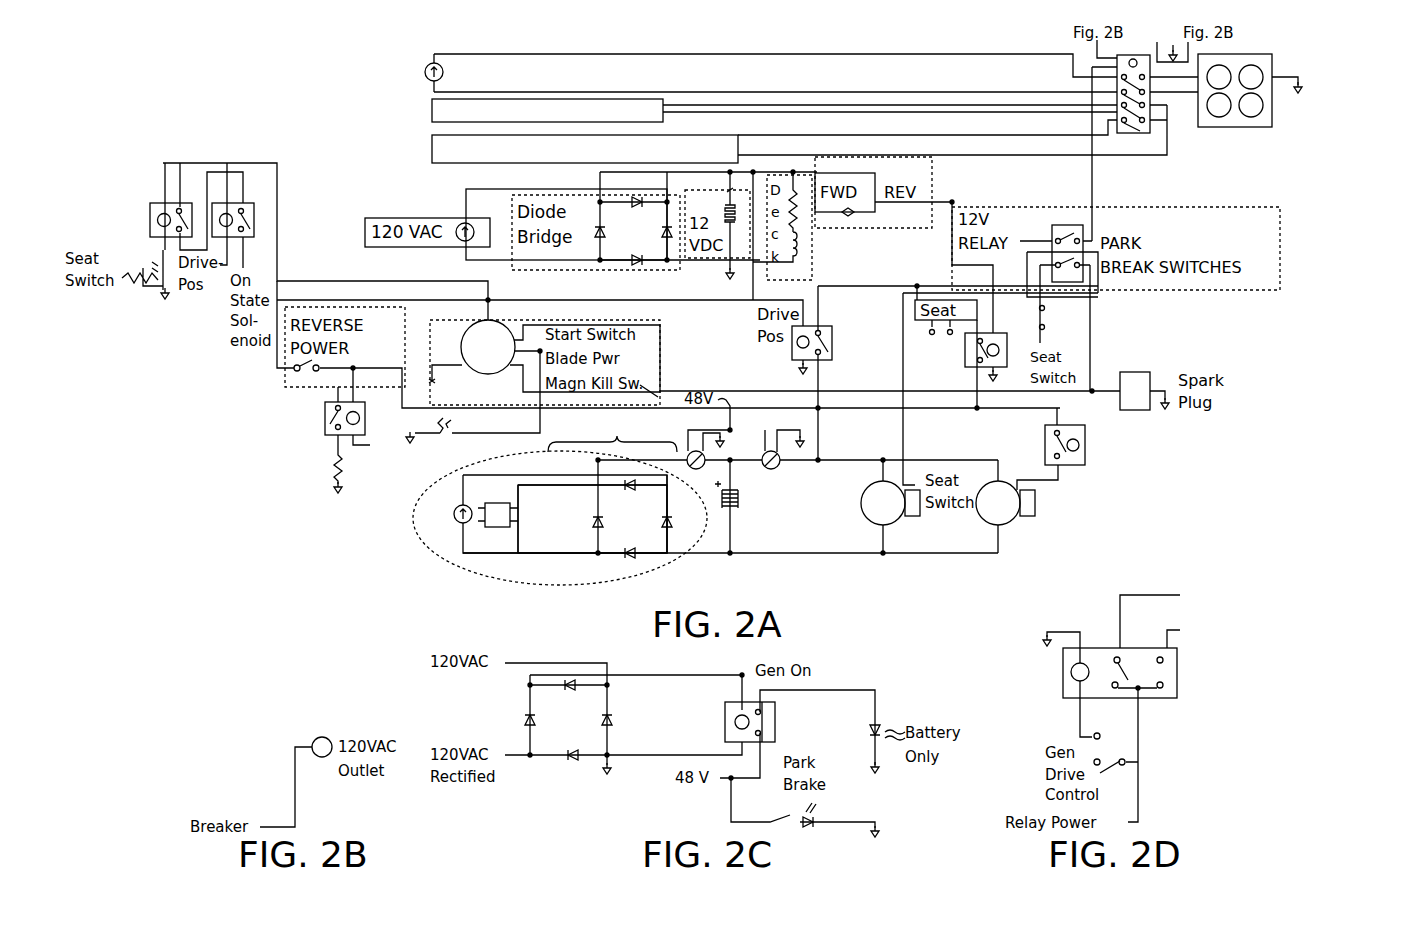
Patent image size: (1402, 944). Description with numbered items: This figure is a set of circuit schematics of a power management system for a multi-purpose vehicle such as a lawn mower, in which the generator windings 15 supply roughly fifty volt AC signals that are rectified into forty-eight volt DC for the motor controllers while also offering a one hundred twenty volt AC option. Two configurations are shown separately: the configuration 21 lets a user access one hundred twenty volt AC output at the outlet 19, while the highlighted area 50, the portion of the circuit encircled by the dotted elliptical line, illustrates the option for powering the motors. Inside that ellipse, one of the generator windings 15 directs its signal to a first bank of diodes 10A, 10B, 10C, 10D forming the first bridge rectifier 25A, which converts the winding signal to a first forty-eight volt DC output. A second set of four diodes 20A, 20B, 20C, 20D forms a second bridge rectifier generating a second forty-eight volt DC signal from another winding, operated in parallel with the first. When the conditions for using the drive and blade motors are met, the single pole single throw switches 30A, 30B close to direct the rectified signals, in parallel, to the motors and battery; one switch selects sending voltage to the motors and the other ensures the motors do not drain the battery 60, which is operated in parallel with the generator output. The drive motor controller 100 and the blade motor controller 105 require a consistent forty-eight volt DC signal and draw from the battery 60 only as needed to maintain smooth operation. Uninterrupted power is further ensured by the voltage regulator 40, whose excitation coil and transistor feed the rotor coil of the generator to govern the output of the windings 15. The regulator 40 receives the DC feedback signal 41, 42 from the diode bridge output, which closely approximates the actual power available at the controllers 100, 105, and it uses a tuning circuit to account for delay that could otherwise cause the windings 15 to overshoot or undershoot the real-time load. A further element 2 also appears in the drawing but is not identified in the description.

In FIG. 2A, the generator on switch 2 is at (1064, 452).
In FIG. 2A, the diode 10A is at (613, 490).
In FIG. 2A, the diode 10B is at (672, 530).
In FIG. 2A, the diode 10C is at (597, 532).
In FIG. 2A, the diode 10D is at (640, 556).
In FIG. 2A, the generator windings 15 is at (428, 66).
In FIG. 2A, the 120 VAC outlet 19 is at (1272, 66).
In FIG. 2A, the diode 20A is at (637, 207).
In FIG. 2C, the diode 20A is at (569, 690).
In FIG. 2A, the diode 20B is at (596, 235).
In FIG. 2C, the diode 20B is at (527, 720).
In FIG. 2A, the diode 20C is at (637, 264).
In FIG. 2C, the diode 20C is at (573, 760).
In FIG. 2A, the diode 20D is at (668, 212).
In FIG. 2C, the diode 20D is at (612, 720).
In FIG. 2A, the 120 VAC output configuration 21 is at (400, 170).
In FIG. 2D, the 120 VAC output configuration 21 is at (1325, 609).
In FIG. 2A, the first bridge rectifier 25A is at (612, 434).
In FIG. 2A, the single pole single throw switch 30A is at (705, 467).
In FIG. 2C, the single pole single throw switch 30A is at (775, 826).
In FIG. 2A, the single pole single throw switch 30B is at (780, 466).
In FIG. 2A, the voltage regulator 40 is at (498, 528).
In FIG. 2A, the feedback signal 41 is at (596, 487).
In FIG. 2A, the feedback signal 42 is at (518, 553).
In FIG. 2A, the highlighted area 50 is at (462, 571).
In FIG. 2A, the 48 VDC battery 60 is at (738, 508).
In FIG. 2A, the drive motor controller 100 is at (885, 526).
In FIG. 2A, the blade motor controller 105 is at (1003, 526).